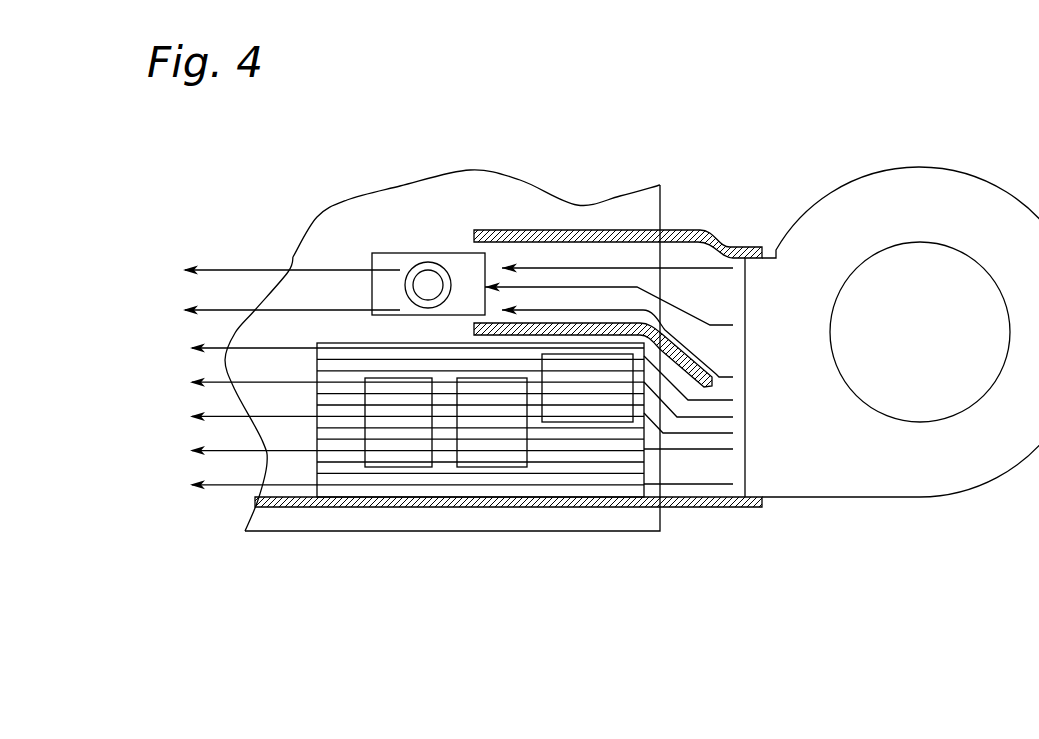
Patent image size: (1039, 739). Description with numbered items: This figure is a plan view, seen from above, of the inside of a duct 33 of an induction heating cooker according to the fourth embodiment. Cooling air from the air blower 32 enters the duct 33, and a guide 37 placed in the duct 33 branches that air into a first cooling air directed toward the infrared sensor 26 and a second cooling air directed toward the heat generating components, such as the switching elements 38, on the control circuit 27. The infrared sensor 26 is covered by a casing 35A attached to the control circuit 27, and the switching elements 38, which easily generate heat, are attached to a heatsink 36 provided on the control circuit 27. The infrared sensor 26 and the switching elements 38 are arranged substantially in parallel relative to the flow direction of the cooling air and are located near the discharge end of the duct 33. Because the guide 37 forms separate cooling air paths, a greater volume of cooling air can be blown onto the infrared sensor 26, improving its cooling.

The infrared sensor 26 is at (430, 280).
The control circuit 27 is at (615, 520).
The air blower 32 is at (830, 468).
The duct 33 is at (595, 230).
The casing 35A is at (402, 252).
The heatsink 36 is at (335, 492).
The guide 37 is at (686, 356).
The switching element 38 is at (575, 410).